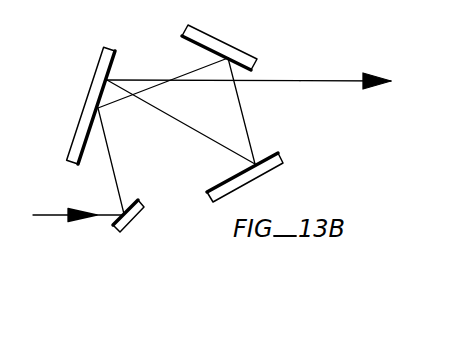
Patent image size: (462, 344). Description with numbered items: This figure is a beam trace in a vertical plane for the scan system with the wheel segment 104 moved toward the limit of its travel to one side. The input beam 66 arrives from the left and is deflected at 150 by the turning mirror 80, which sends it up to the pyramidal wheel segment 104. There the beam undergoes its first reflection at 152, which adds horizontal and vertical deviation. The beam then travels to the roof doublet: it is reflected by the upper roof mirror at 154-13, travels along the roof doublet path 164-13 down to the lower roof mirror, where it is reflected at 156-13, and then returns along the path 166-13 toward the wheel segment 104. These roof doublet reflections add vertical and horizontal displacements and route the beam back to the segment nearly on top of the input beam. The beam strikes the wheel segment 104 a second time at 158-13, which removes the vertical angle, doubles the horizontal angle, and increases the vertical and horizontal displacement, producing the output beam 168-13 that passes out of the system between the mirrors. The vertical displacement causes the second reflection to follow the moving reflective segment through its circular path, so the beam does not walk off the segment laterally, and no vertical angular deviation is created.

The wheel segment 104 is at (83, 127).
The first reflection point on wheel segment 152 is at (100, 108).
The deflection point on turning mirror 150 is at (123, 212).
The turning mirror 80 is at (143, 214).
The beam 66 is at (45, 214).
The second reflection point on wheel segment 158-13 is at (108, 80).
The output beam 168-13 is at (346, 80).
The roof doublet reflection beam 166-13 is at (177, 122).
The upper roof mirror reflection point 154-13 is at (222, 57).
The roof doublet reflection beam 164-13 is at (243, 107).
The lower roof mirror reflection point 156-13 is at (257, 158).